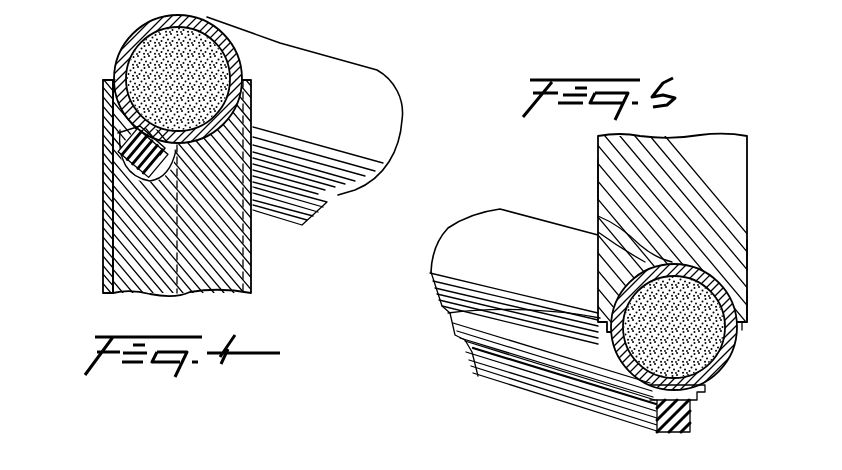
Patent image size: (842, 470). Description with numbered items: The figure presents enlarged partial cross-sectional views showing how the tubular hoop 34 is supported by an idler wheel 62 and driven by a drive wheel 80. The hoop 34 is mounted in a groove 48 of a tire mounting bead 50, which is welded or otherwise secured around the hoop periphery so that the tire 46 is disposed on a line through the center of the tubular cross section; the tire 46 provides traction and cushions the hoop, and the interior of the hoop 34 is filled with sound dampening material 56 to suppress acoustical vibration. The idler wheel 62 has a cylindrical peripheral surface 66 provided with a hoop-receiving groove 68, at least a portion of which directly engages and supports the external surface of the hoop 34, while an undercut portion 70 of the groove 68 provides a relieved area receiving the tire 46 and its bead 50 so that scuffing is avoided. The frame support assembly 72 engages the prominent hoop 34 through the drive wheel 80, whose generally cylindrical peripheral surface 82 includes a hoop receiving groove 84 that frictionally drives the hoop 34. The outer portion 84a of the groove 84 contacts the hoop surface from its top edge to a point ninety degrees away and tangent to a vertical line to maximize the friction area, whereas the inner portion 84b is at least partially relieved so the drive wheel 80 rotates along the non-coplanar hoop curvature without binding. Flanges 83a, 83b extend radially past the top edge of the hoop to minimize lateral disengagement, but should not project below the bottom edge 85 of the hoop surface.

In FIG. 4, the hoop 34 is at (350, 80).
In FIG. 5, the hoop 34 is at (490, 212).
In FIG. 4, the tire 46 is at (120, 160).
In FIG. 5, the tire 46 is at (612, 400).
In FIG. 4, the groove 48 is at (116, 150).
In FIG. 5, the groove 48 is at (530, 385).
In FIG. 4, the tire mounting bead 50 is at (105, 120).
In FIG. 4, the sound dampening material 56 is at (182, 50).
In FIG. 5, the sound dampening material 56 is at (700, 343).
In FIG. 4, the idler wheel 62 is at (120, 258).
In FIG. 4, the peripheral surface 66 is at (106, 80).
In FIG. 4, the hoop-receiving groove 68 is at (272, 212).
In FIG. 4, the undercut portion 70 is at (117, 190).
In FIG. 5, the frame support assembly 72 is at (598, 153).
In FIG. 5, the drive wheel 80 is at (605, 182).
In FIG. 5, the peripheral surface 82 is at (745, 325).
In FIG. 5, the flange 83a is at (743, 307).
In FIG. 5, the flange 83b is at (450, 312).
In FIG. 5, the hoop receiving groove 84 is at (620, 230).
In FIG. 5, the outer portion 84a is at (748, 257).
In FIG. 5, the inner portion 84b is at (600, 288).
In FIG. 5, the bottom edge 85 is at (700, 390).